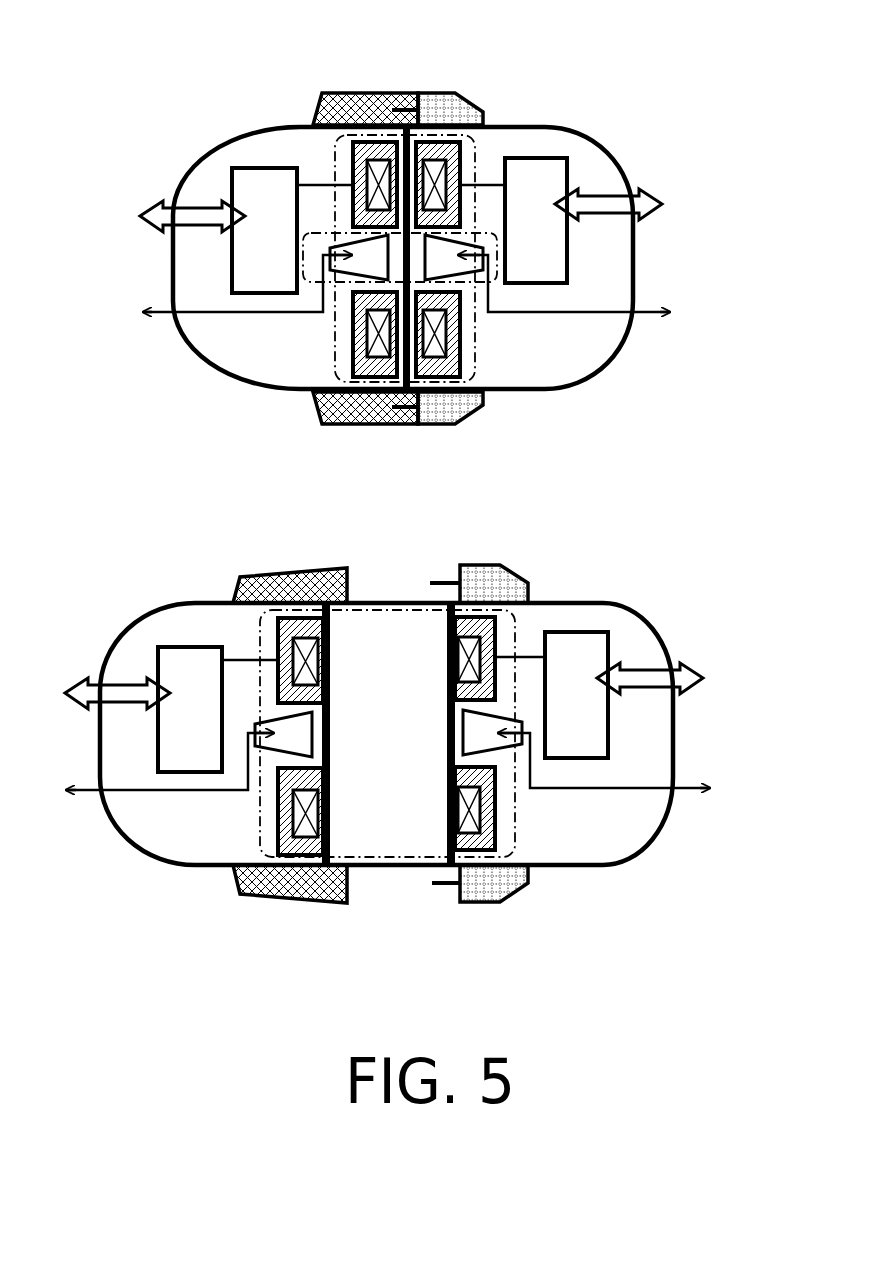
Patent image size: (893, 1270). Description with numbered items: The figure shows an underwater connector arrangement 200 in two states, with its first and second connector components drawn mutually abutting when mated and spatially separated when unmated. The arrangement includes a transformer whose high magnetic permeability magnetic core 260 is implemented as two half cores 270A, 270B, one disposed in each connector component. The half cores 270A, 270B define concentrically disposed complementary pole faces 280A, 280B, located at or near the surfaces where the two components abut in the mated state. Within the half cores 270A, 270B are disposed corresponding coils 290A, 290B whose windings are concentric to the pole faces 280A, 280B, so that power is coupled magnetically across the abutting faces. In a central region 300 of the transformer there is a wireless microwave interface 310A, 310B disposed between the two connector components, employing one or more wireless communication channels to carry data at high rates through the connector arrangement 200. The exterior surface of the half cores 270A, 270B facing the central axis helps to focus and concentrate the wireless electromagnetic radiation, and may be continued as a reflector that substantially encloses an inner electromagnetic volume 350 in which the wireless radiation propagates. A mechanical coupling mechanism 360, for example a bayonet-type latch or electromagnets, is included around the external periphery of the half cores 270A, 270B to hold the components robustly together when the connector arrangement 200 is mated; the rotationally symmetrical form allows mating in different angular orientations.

The underwater connector arrangement 200 is at (636, 349).
The magnetic core 260 is at (352, 146).
The first half core 270A is at (278, 630).
The second half core 270B is at (495, 630).
The first pole face 280A is at (330, 697).
The second pole face 280B is at (450, 775).
The first coil 290A is at (376, 334).
The second coil 290B is at (482, 815).
The central region 300 is at (277, 762).
The first wireless microwave interface 310A is at (322, 734).
The second wireless microwave interface 310B is at (460, 733).
The inner electromagnetic volume 350 is at (314, 284).
The mechanical coupling mechanism 360 is at (366, 88).